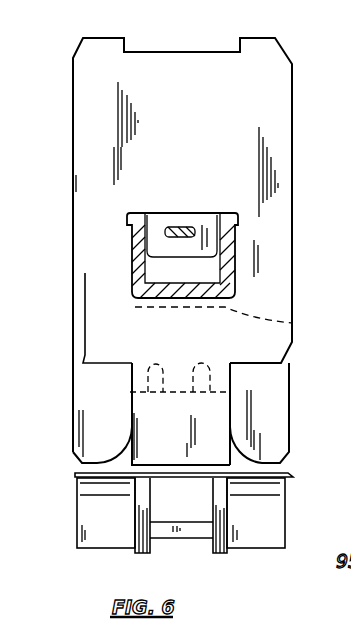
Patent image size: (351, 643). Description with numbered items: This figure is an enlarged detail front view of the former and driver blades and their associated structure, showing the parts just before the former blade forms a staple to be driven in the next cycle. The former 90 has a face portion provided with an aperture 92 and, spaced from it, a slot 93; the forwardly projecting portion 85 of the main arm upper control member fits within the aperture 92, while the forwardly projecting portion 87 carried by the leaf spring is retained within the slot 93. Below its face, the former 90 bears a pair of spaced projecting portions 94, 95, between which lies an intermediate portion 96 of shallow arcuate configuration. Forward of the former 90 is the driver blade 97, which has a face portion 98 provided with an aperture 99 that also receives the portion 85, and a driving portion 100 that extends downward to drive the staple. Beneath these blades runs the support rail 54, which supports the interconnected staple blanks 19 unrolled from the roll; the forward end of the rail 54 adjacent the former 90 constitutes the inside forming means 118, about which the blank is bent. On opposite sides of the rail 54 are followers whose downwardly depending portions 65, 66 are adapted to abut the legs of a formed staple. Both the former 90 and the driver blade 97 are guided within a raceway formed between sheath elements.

The driver blade 97 is at (290, 82).
The face portion 98 is at (202, 160).
The aperture 99 is at (140, 216).
The slot 93 is at (178, 228).
The forwardly projecting portion 87 is at (165, 236).
The forwardly projecting portion 85 is at (224, 272).
The aperture 92 is at (293, 323).
The intermediate portion 96 is at (176, 373).
The former 90 is at (292, 374).
The driving portion 100 is at (160, 442).
The projecting portion 95 is at (95, 447).
The projecting portion 94 is at (272, 447).
The staple blanks 19 is at (289, 477).
The downwardly depending portion 66 is at (93, 530).
The downwardly depending portion 65 is at (272, 532).
The inside forming means 118 is at (217, 487).
The support rail 54 is at (163, 530).